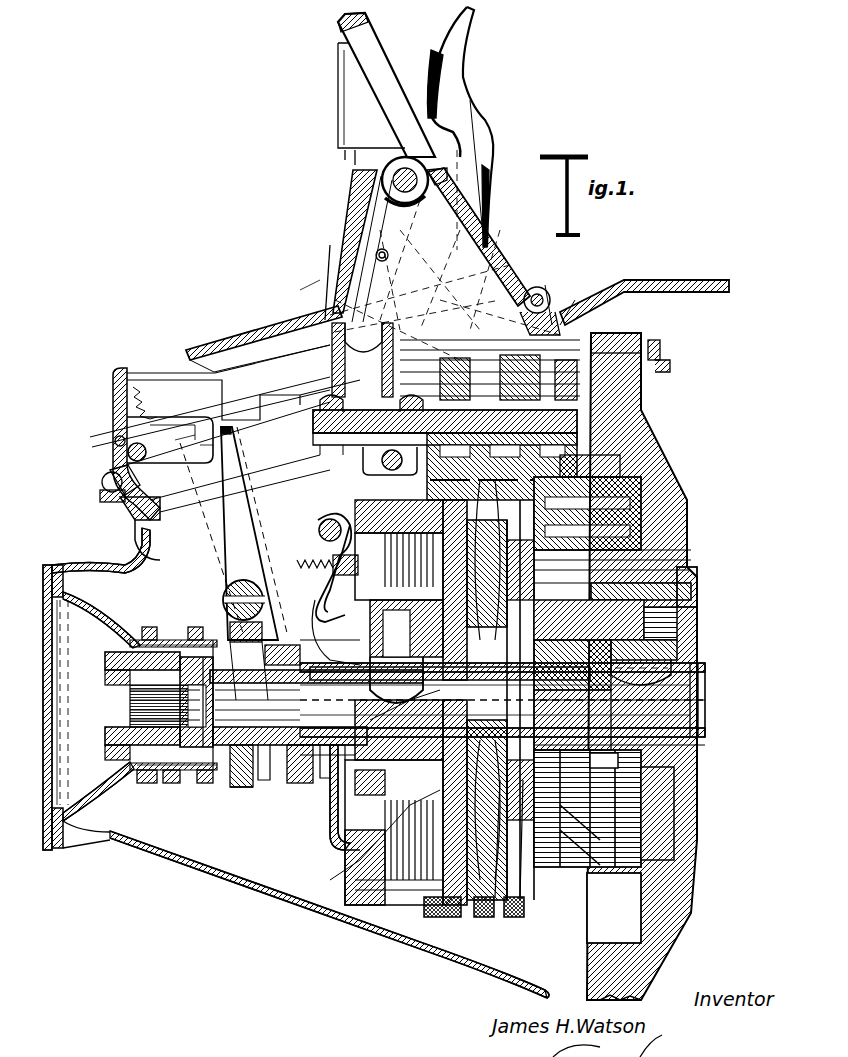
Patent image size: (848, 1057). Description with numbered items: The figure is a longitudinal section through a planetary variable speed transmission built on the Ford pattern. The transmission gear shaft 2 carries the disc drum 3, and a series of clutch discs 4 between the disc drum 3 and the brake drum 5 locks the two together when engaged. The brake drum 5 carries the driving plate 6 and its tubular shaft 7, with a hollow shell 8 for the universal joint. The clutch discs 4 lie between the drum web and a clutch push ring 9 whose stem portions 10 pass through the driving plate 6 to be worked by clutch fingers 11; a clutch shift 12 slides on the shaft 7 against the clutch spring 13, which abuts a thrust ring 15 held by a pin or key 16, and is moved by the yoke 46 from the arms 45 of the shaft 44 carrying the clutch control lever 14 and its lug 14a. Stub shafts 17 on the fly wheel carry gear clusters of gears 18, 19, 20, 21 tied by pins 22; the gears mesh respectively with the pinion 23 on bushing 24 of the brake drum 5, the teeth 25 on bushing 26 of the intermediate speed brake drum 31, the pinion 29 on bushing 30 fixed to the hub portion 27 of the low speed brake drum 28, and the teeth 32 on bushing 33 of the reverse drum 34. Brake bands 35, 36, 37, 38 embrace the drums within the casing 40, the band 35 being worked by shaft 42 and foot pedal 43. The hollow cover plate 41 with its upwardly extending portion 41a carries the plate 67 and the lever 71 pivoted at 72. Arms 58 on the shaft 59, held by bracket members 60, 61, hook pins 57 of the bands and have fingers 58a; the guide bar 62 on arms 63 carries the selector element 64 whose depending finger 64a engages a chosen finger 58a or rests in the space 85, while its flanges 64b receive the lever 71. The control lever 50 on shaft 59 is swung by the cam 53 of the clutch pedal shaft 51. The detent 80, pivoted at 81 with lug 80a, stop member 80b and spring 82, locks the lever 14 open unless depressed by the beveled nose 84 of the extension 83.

The transmission gear shaft 2 is at (178, 640).
The disc drum 3 is at (326, 64).
The clutch discs 4 is at (110, 413).
The brake drum 5 is at (335, 305).
The driving plate 6 is at (332, 840).
The tubular shaft 7 is at (300, 770).
The hollow shell 8 is at (100, 622).
The clutch push ring 9 is at (325, 575).
The stem portions 10 is at (320, 538).
The clutch fingers 11 is at (340, 590).
The clutch shift 12 is at (262, 780).
The clutch spring 13 is at (170, 788).
The clutch control lever 14 is at (230, 540).
The laterally projecting lug 14a is at (232, 430).
The thrust ring 15 is at (160, 620).
The transverse pin or key 16 is at (135, 710).
The stub shafts 17 is at (688, 515).
The gear 18 is at (620, 500).
The gear 19 is at (655, 470).
The gear 20 is at (665, 455).
The gear 21 is at (660, 440).
The pins or tie members 22 is at (690, 497).
The pinion 23 is at (680, 650).
The bushing 24 is at (680, 670).
The teeth 25 is at (640, 800).
The bushing 26 is at (677, 620).
The hub portion 27 is at (690, 568).
The low speed brake drum 28 is at (640, 405).
The pinion 29 is at (640, 830).
The bushing 30 is at (695, 598).
The intermediate speed brake drum 31 is at (665, 385).
The teeth 32 is at (610, 840).
The bushing 33 is at (695, 585).
The reverse drum 34 is at (640, 470).
The brake band 35 is at (430, 910).
The brake band 36 is at (478, 915).
The brake band 37 is at (505, 920).
The brake band 38 is at (520, 925).
The casing 40 is at (252, 888).
The cover plate 41 is at (118, 366).
The upwardly extending portion 41a is at (344, 209).
The shaft 42 is at (365, 460).
The foot pedal 43 is at (470, 128).
The shaft 44 is at (225, 598).
The arms 45 is at (228, 622).
The yoke 46 is at (230, 790).
The control lever 50 is at (535, 292).
The shaft 51 is at (360, 490).
The cam 53 is at (330, 352).
The pins 57 is at (360, 505).
The arms 58 is at (650, 355).
The fingers 58a is at (548, 290).
The shaft 59 is at (330, 460).
The bracket member 60 is at (560, 320).
The bracket member 61 is at (340, 345).
The guide bar 62 is at (590, 305).
The arms 63 is at (610, 340).
The selector element 64 is at (345, 338).
The depending finger 64a is at (455, 275).
The transversely extending flanges 64b is at (318, 271).
The plate 67 is at (125, 520).
The lever 71 is at (375, 78).
The pivot 72 is at (394, 190).
The detent 80 is at (125, 480).
The lug 80a is at (112, 490).
The stop member 80b is at (110, 447).
The pivot 81 is at (125, 455).
The spring 82 is at (155, 372).
The rearwardly projecting extension 83 is at (215, 358).
The beveled nose 84 is at (120, 428).
The space 85 is at (490, 330).